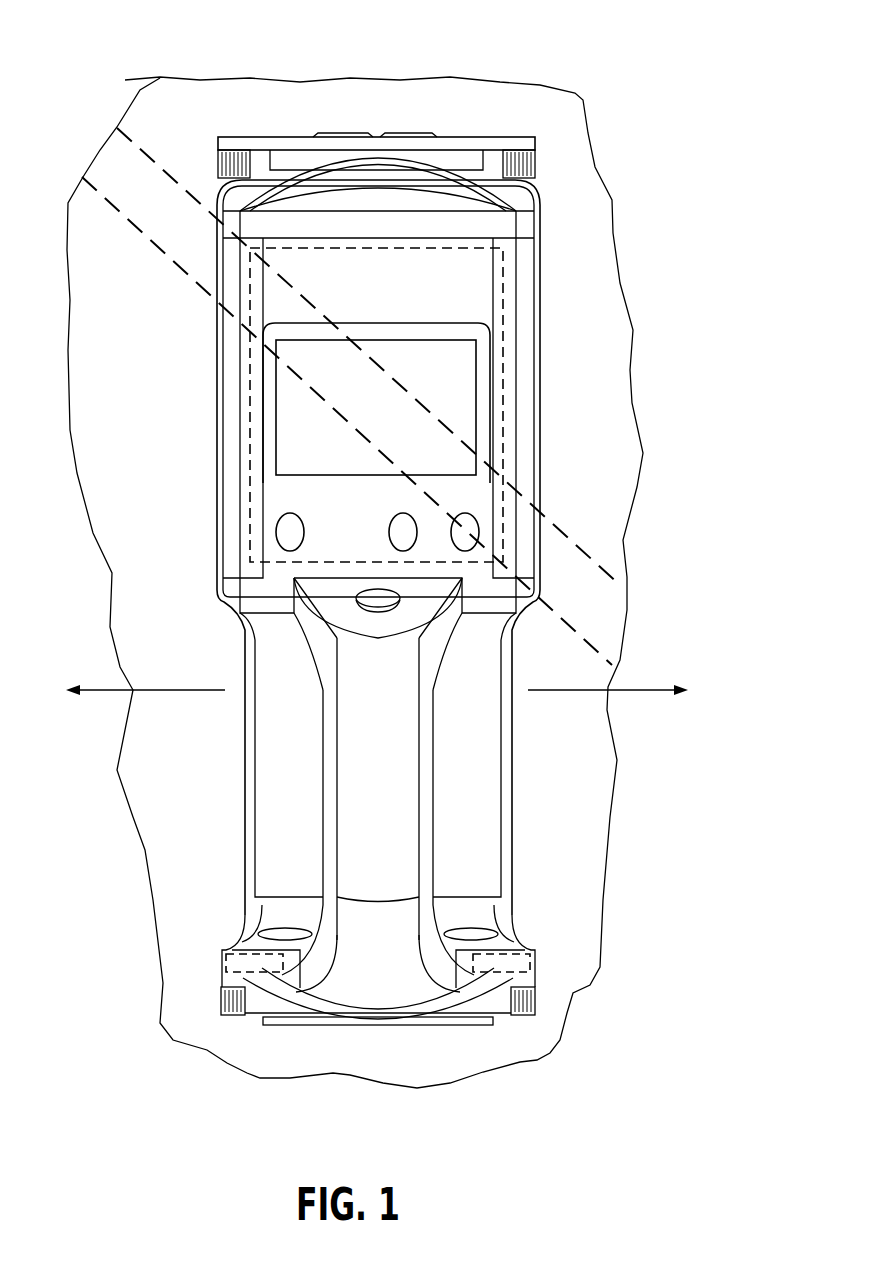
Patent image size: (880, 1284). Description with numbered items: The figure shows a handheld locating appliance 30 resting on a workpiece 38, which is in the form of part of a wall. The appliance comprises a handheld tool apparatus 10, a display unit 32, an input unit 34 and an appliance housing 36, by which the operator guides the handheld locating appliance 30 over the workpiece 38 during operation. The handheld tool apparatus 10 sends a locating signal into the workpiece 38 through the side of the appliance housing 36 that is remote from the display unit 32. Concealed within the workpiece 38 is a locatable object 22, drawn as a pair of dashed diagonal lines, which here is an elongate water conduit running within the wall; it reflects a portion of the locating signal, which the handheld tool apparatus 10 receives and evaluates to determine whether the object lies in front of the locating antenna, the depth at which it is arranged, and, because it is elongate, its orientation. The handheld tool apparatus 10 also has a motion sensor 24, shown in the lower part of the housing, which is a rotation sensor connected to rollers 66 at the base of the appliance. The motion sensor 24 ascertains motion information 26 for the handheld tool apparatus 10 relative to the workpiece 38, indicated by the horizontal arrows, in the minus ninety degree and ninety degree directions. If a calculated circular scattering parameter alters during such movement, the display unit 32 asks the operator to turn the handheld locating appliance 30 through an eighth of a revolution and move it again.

The handheld tool apparatus 10 is at (490, 272).
The locatable object 22 is at (608, 618).
The motion sensor 24 is at (222, 960).
The motion information 26 is at (110, 690).
The handheld locating appliance 30 is at (533, 108).
The display unit 32 is at (457, 388).
The input unit 34 is at (268, 531).
The appliance housing 36 is at (228, 483).
The workpiece 38 is at (630, 487).
The rollers 66 is at (232, 1018).